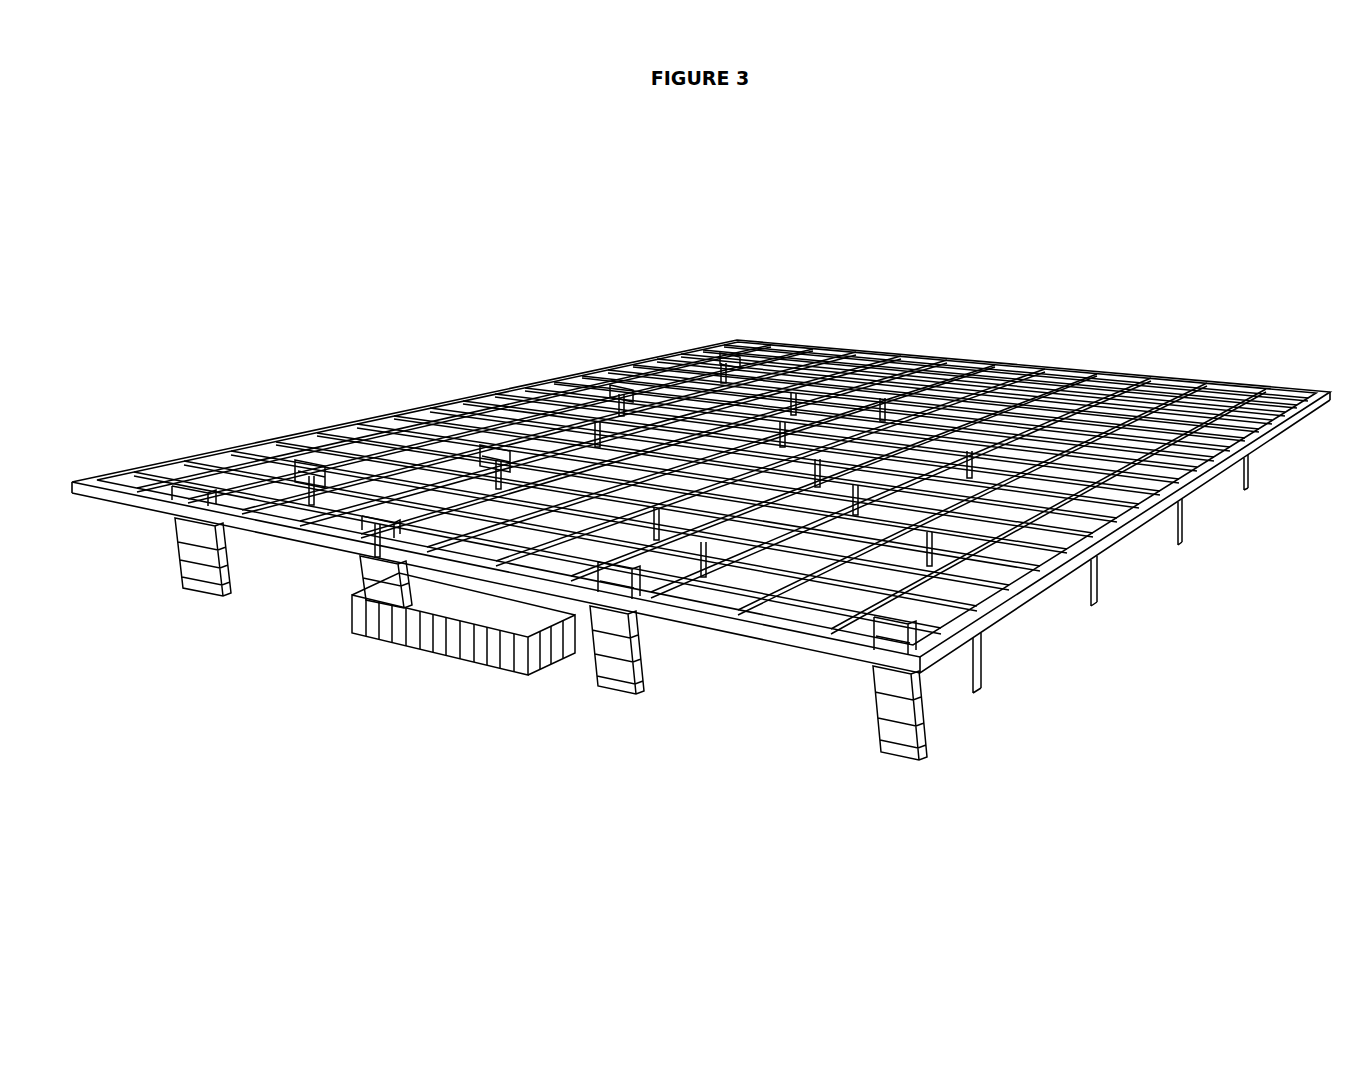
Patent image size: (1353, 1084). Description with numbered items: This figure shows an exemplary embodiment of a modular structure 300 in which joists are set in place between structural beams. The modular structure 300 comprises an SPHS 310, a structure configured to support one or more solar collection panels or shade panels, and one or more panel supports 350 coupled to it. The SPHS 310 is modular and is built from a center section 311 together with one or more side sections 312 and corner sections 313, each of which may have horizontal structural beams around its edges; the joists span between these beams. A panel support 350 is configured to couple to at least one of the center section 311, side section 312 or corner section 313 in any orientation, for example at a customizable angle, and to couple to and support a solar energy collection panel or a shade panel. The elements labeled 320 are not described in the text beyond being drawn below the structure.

The modular structure 300 is at (707, 491).
The SPHS 310 is at (1057, 363).
The center section 311 is at (545, 398).
The side section 312 is at (297, 432).
The corner section 313 is at (137, 468).
The support leg 320 is at (1097, 573).
The panel support 350 is at (790, 612).